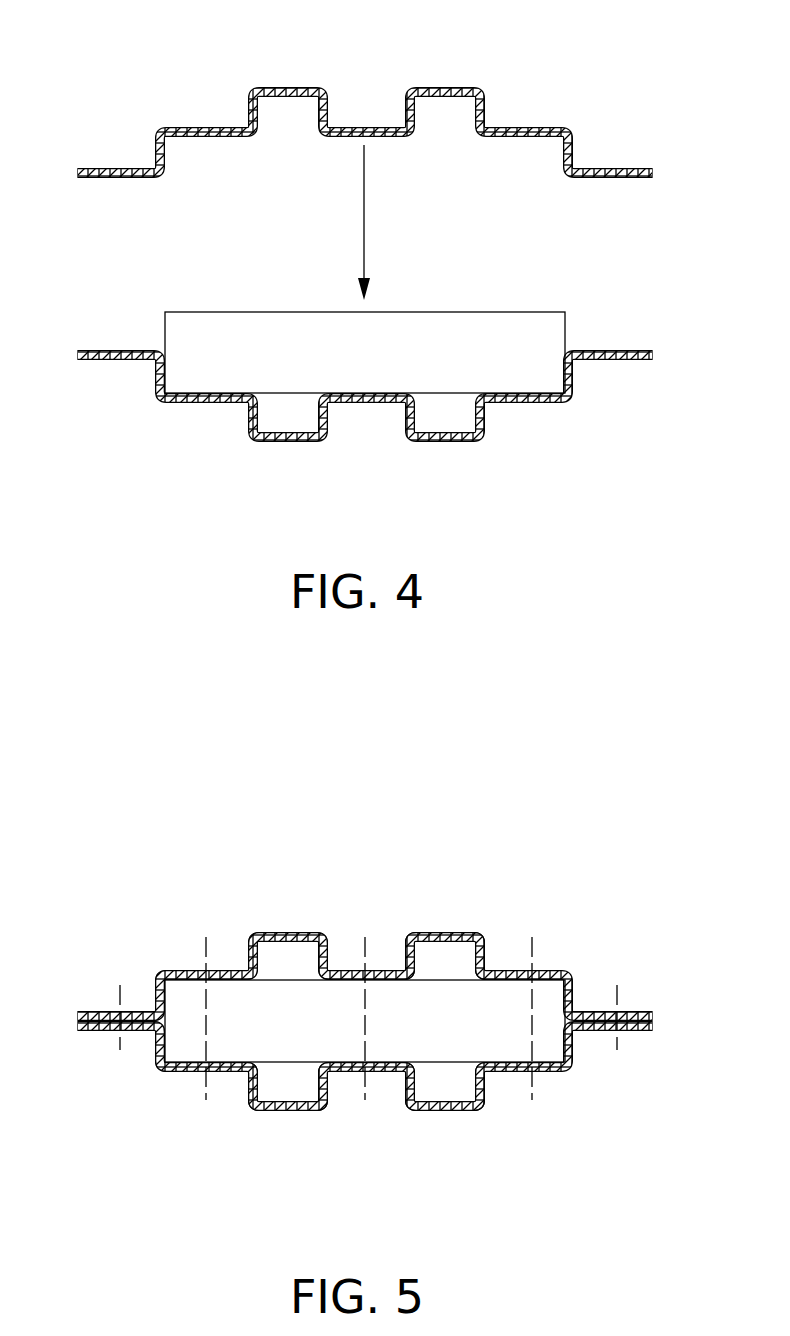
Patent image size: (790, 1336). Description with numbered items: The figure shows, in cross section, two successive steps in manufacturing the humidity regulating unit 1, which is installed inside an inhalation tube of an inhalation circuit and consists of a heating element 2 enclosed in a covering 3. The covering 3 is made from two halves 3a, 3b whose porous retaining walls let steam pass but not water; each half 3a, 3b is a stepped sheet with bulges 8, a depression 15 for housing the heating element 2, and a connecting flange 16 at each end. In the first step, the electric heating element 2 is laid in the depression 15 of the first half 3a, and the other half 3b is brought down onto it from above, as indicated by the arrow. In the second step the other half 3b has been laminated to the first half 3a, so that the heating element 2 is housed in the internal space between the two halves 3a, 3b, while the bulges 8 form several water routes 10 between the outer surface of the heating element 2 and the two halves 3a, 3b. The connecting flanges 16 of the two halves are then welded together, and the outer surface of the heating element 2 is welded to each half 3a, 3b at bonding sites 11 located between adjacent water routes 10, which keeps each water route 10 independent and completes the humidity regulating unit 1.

In FIG. 5, the humidity regulating unit 1 is at (158, 895).
In FIG. 4, the heating element 2 is at (224, 360).
In FIG. 5, the heating element 2 is at (502, 1040).
In FIG. 5, the covering 3 is at (155, 960).
In FIG. 4, the first half 3a is at (597, 368).
In FIG. 5, the first half 3a is at (562, 1075).
In FIG. 4, the other half 3b is at (572, 124).
In FIG. 5, the other half 3b is at (155, 988).
In FIG. 4, the bulges 8 is at (290, 88).
In FIG. 5, the bulges 8 is at (420, 932).
In FIG. 4, the water routes 10 is at (285, 408).
In FIG. 5, the water routes 10 is at (455, 957).
In FIG. 5, the bonding sites 11 is at (365, 957).
In FIG. 4, the depression 15 is at (187, 150).
In FIG. 4, the connecting flange 16 is at (633, 170).
In FIG. 5, the connecting flange 16 is at (633, 1012).